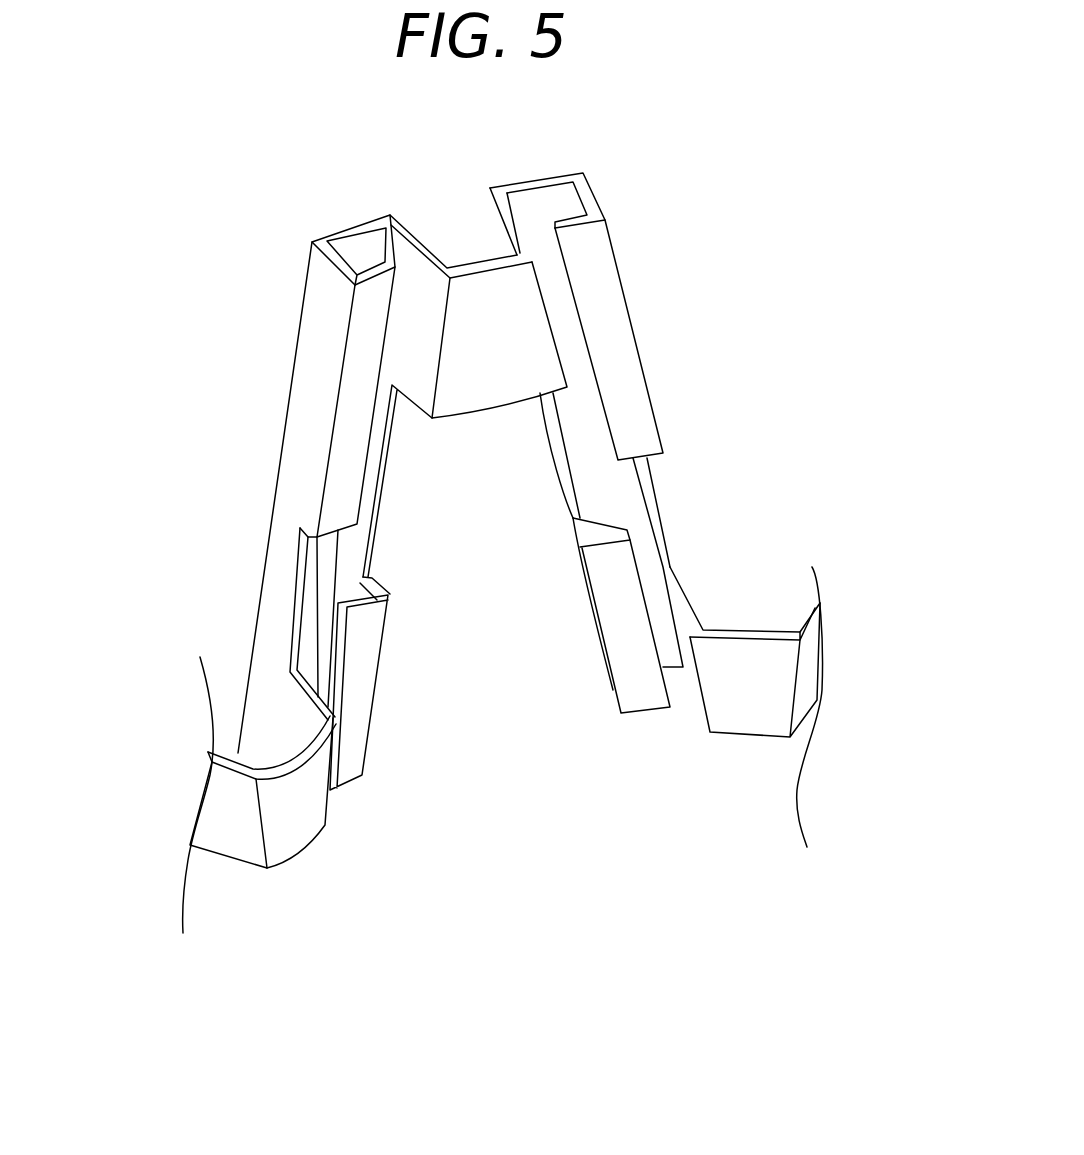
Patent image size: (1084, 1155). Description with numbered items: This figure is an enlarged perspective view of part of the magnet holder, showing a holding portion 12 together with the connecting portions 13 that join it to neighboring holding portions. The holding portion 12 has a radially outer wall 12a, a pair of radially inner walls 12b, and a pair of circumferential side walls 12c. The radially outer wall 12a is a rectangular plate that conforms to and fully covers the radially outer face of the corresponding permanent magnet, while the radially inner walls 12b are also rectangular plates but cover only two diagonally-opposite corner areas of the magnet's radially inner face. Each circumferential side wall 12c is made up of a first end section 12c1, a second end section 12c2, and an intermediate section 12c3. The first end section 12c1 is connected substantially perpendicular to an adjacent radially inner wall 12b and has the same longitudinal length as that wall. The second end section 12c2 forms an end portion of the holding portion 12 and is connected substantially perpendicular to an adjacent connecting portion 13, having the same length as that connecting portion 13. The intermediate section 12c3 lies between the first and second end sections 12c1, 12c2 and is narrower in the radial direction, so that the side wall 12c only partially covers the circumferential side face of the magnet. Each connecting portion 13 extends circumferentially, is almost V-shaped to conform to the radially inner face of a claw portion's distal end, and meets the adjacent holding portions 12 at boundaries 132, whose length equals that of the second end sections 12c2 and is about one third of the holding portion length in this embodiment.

The holding portion 12 is at (406, 452).
The radially outer wall 12a is at (340, 230).
The radially inner wall 12b is at (363, 378).
The circumferential side wall 12c is at (376, 587).
The first end section 12c1 is at (317, 417).
The second end section 12c2 is at (277, 737).
The intermediate section 12c3 is at (280, 590).
The connecting portion 13 is at (505, 541).
The boundary 132 is at (440, 337).